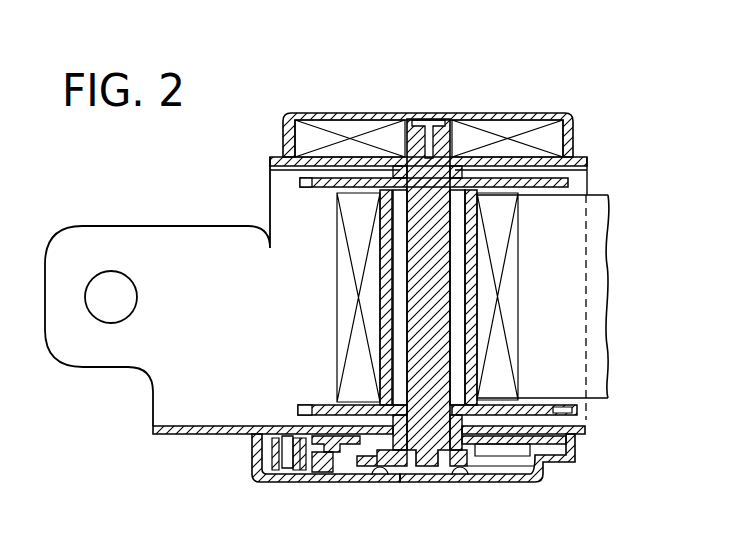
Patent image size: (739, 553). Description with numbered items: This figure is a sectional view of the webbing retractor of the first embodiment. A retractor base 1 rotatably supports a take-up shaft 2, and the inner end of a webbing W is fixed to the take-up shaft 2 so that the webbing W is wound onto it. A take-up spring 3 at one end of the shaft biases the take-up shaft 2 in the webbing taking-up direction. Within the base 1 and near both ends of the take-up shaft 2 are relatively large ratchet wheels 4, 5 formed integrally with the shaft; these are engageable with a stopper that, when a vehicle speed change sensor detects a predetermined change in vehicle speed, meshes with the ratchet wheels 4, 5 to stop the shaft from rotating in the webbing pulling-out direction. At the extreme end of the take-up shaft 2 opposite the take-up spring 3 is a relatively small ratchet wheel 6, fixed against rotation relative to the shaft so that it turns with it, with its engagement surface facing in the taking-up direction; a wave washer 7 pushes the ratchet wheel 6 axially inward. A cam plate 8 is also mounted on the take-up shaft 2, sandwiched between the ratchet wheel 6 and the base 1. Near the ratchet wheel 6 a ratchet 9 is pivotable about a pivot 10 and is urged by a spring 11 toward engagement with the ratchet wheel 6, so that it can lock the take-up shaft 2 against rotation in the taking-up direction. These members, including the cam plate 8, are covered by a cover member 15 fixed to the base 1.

The retractor base 1 is at (167, 403).
The take-up shaft 2 is at (418, 315).
The take-up spring 3 is at (526, 127).
The ratchet wheel 4 is at (545, 181).
The ratchet wheel 5 is at (547, 410).
The ratchet wheel 6 is at (366, 466).
The wave washer 7 is at (456, 470).
The cam plate 8 is at (340, 444).
The ratchet 9 is at (337, 472).
The pivot 10 is at (290, 466).
The spring 11 is at (262, 455).
The cover member 15 is at (535, 475).
The webbing W is at (595, 213).